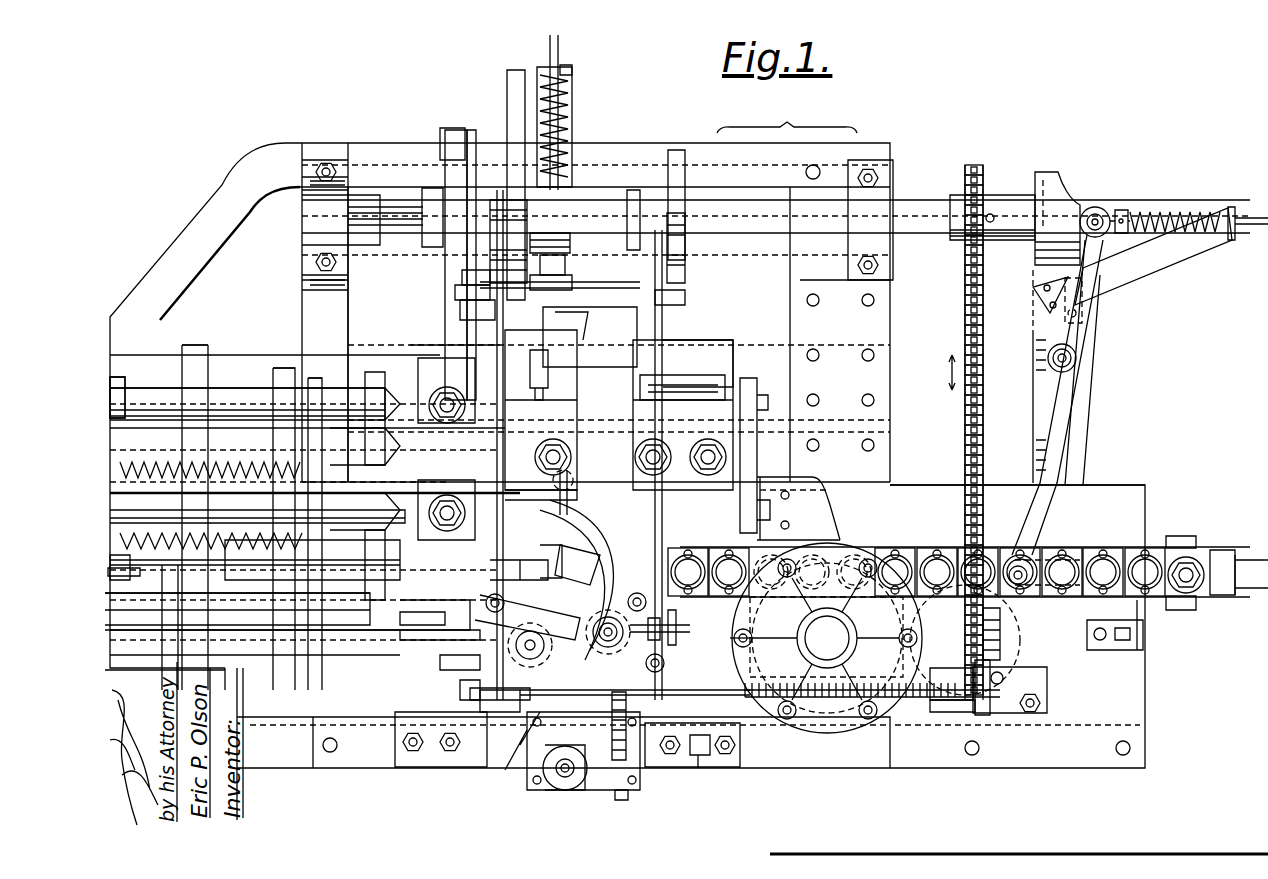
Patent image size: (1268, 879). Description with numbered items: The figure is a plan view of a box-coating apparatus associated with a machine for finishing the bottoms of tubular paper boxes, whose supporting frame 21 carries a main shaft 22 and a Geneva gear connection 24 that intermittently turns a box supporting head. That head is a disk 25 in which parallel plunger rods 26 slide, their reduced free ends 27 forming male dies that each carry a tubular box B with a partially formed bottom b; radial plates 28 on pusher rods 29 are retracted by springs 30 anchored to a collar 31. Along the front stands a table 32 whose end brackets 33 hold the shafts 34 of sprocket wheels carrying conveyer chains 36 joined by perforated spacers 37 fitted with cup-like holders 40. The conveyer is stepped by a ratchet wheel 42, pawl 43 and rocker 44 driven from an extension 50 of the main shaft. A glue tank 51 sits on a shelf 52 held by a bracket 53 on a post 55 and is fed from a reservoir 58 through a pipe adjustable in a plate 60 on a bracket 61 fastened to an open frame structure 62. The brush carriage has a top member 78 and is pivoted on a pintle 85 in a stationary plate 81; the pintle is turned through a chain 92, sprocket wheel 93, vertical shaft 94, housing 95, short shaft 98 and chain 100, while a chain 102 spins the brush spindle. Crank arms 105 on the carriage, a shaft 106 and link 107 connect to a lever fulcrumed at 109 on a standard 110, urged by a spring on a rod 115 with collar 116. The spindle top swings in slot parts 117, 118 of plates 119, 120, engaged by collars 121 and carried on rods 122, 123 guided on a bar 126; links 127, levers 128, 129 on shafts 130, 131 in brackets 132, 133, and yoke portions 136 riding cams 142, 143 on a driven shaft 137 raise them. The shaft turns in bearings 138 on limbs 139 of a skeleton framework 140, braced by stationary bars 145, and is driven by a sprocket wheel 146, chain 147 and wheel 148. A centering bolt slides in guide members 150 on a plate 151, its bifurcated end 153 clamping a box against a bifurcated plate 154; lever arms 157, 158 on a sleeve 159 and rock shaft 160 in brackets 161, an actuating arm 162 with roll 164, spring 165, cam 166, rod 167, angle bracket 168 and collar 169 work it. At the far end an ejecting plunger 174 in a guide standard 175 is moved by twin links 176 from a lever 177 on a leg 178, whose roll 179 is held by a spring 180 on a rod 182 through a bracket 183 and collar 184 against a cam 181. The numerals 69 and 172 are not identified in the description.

The supporting frame 21 is at (370, 355).
The main shaft 22 is at (252, 640).
The Geneva gear connection 24 is at (195, 345).
The disk 25 is at (280, 368).
The plunger rods 26 is at (230, 390).
The free ends 27 is at (352, 605).
The radial plates 28 is at (316, 378).
The pusher rods 29 is at (142, 405).
The springs 30 is at (232, 532).
The collar 31 is at (128, 512).
The table 32 is at (1120, 488).
The brackets 33 is at (410, 755).
The shafts 34 is at (455, 755).
The chains 36 is at (1000, 545).
The spacers 37 is at (840, 548).
The holders 40 is at (1252, 555).
The ratchet wheel 42 is at (434, 641).
The pawl 43 is at (440, 660).
The rocker 44 is at (460, 690).
The extension of the main shaft 50 is at (1005, 627).
The tank 51 is at (782, 700).
The shelf 52 is at (430, 620).
The bracket 53 is at (960, 712).
The post 55 is at (990, 715).
The glue reservoir 58 is at (835, 718).
The plate 60 is at (820, 500).
The bracket 61 is at (790, 490).
The open frame structure 62 is at (757, 490).
The rod 69 is at (600, 685).
The top member 78 is at (590, 632).
The horizontal plate 81 is at (480, 505).
The pintle 85 is at (528, 630).
The chain 92 is at (510, 770).
The sprocket wheel 93 is at (570, 775).
The vertical shaft 94 is at (560, 782).
The housing 95 is at (625, 800).
The short shaft 98 is at (670, 757).
The chain 100 is at (583, 751).
The chain 102 is at (542, 565).
The angular extensions 105 is at (487, 760).
The vertical shaft 106 is at (485, 705).
The horizontal link 107 is at (604, 726).
The fulcrum 109 is at (698, 768).
The standard 110 is at (727, 757).
The rod 115 is at (1040, 710).
The collar 116 is at (745, 700).
The slot part 117 is at (585, 590).
The slot part 118 is at (562, 549).
The plate 119 is at (598, 548).
The plate 120 is at (540, 545).
The set screw collars 121 is at (678, 630).
The depending rods 122 is at (642, 590).
The depending rods 123 is at (500, 615).
The bar 126 is at (690, 450).
The links 127 is at (672, 620).
The lever 128 is at (700, 298).
The lever 129 is at (375, 450).
The shaft 130 is at (740, 352).
The shaft 131 is at (590, 337).
The bearing bracket 132 is at (765, 440).
The bearing bracket 133 is at (572, 440).
The yoke portion 136 is at (500, 195).
The driven shaft 137 is at (302, 215).
The bearings 138 is at (323, 170).
The limbs 139 is at (310, 290).
The skeleton framework 140 is at (787, 116).
The cam 142 is at (678, 150).
The cam 143 is at (513, 130).
The stationary bars 145 is at (415, 240).
The sprocket wheel 146 is at (975, 160).
The chain 147 is at (957, 266).
The sprocket wheel 148 is at (1000, 660).
The guide members 150 is at (655, 372).
The plate 151 is at (425, 360).
The bifurcated end 153 is at (560, 495).
The bifurcated plate 154 is at (590, 575).
The lever arm 157 is at (566, 264).
The lever arm 158 is at (460, 273).
The sleeve 159 is at (572, 280).
The rock shaft 160 is at (455, 292).
The brackets 161 is at (460, 310).
The actuating arm 162 is at (472, 130).
The roll 164 is at (450, 128).
The spring 165 is at (572, 90).
The cam 166 is at (445, 160).
The rod 167 is at (558, 40).
The angle bracket 168 is at (575, 72).
The collar 169 is at (570, 243).
The pin 172 is at (565, 340).
The plunger 174 is at (1230, 545).
The guide standard 175 is at (1143, 650).
The twin links 176 is at (1040, 560).
The horizontal lever 177 is at (1063, 385).
The leg 178 is at (1075, 416).
The roll 179 is at (1102, 207).
The spring 180 is at (1185, 208).
The cam 181 is at (1050, 172).
The rod 182 is at (1250, 214).
The bracket 183 is at (1210, 243).
The collar 184 is at (1125, 210).
The tubular box B is at (365, 402).
The partially formed bottom b is at (396, 442).